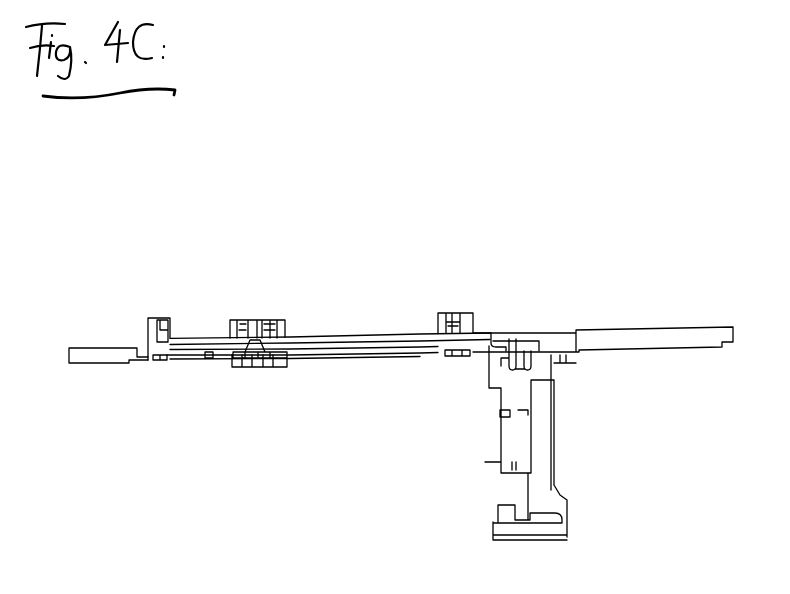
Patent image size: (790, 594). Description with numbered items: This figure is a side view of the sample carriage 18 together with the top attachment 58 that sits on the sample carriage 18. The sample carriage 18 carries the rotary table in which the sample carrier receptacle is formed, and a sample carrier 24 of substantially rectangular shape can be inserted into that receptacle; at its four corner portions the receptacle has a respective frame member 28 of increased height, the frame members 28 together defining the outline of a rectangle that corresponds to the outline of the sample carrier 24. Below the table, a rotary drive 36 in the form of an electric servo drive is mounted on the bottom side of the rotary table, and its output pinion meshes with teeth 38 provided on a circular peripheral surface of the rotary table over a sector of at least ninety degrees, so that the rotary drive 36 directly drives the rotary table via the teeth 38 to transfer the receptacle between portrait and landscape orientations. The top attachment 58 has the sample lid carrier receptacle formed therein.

The sample carriage 18 is at (88, 407).
The sample carrier 24 is at (328, 400).
The frame member 28 is at (309, 287).
The rotary drive 36 is at (573, 439).
The teeth 38 is at (522, 294).
The top attachment 58 is at (614, 285).